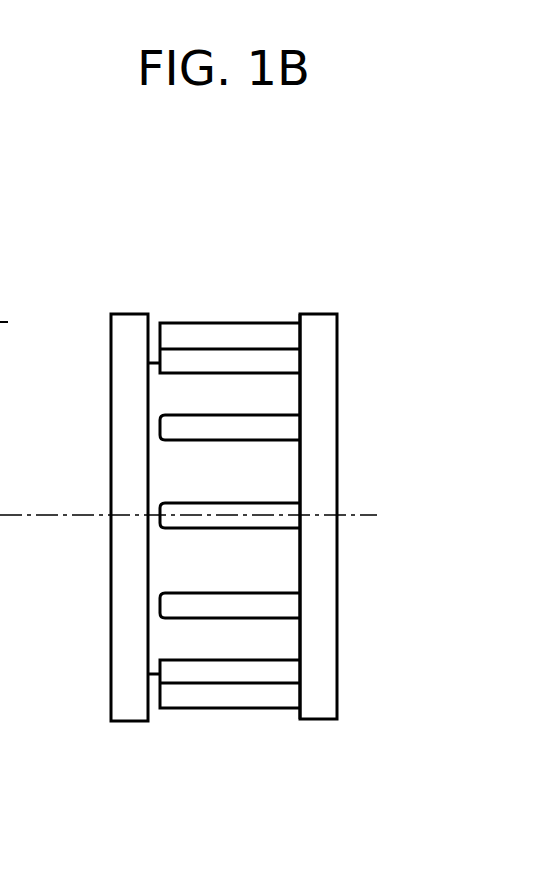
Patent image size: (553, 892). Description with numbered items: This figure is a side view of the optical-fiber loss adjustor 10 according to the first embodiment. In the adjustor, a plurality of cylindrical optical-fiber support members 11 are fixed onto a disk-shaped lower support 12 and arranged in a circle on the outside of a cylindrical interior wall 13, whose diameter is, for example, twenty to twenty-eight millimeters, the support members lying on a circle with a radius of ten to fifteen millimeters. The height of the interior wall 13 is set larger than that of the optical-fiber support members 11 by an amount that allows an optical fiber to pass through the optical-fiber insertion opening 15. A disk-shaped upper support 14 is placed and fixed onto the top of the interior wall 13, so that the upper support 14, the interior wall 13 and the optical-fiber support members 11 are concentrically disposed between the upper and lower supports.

The optical-fiber loss adjustor 10 is at (353, 147).
The optical-fiber support member 11 is at (221, 322).
The lower support 12 is at (320, 419).
The interior wall 13 is at (293, 565).
The upper support 14 is at (118, 405).
The optical-fiber insertion opening 15 is at (154, 676).